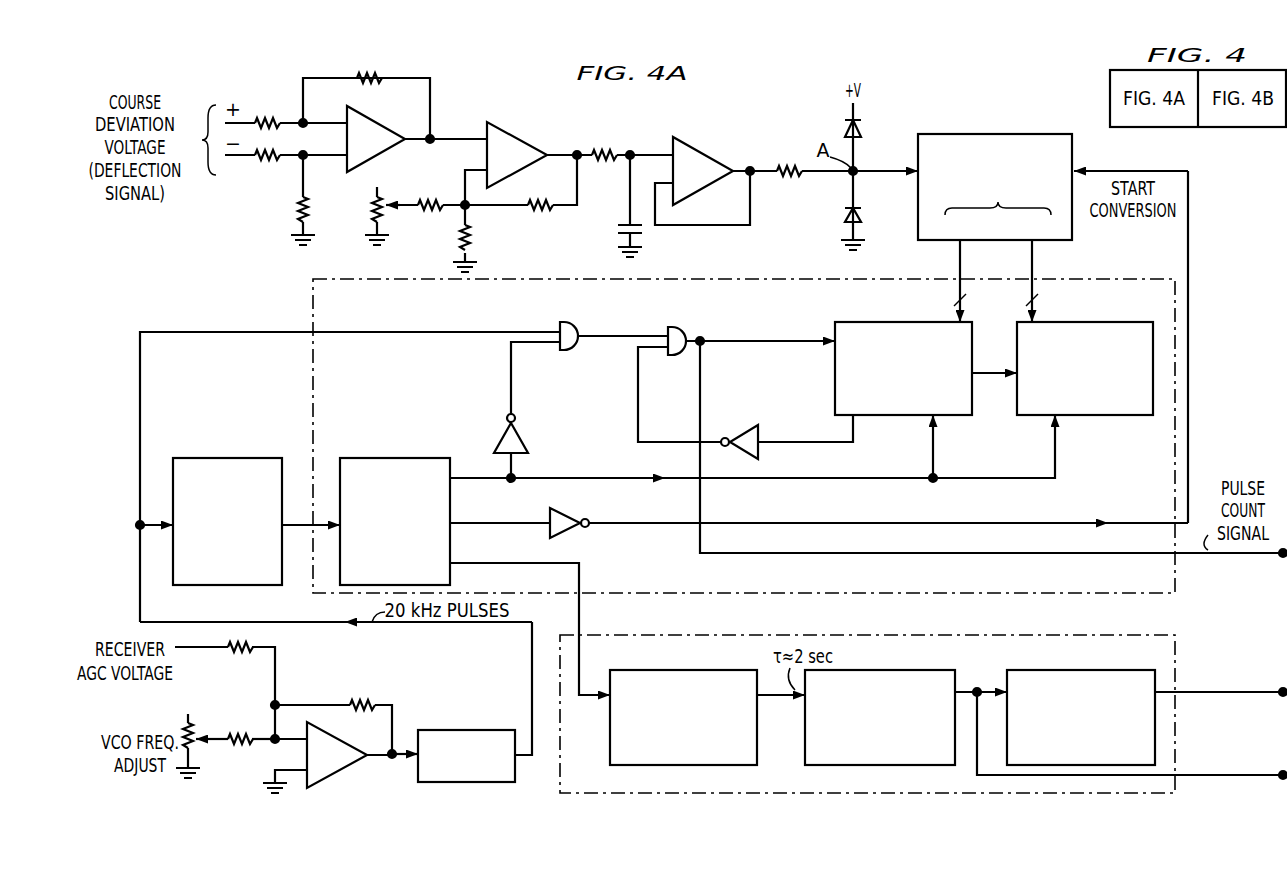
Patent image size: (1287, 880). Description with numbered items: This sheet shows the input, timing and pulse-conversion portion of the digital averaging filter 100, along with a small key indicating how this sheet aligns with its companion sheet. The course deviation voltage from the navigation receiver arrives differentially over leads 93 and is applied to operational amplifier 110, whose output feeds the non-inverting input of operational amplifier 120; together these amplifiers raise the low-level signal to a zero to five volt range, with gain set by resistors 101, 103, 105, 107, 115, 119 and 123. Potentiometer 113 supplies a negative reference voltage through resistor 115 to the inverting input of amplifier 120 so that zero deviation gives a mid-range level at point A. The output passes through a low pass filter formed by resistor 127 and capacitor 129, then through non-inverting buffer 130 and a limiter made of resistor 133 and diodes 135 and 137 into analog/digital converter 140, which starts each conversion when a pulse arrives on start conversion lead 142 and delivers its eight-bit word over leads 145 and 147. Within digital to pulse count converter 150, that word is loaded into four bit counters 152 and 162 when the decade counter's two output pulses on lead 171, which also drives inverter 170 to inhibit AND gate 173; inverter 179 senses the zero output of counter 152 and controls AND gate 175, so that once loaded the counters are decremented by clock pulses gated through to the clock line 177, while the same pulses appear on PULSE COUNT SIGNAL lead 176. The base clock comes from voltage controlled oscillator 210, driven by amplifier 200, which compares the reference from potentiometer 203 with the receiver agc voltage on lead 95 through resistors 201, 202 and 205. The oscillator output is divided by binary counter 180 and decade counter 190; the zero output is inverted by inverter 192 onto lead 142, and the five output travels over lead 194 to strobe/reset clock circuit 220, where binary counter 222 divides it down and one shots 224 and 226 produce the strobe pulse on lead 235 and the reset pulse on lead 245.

The leads 93 is at (247, 167).
The lead 95 is at (208, 653).
The digital averaging filter 100 is at (1220, 205).
The resistor 101 is at (270, 163).
The resistor 103 is at (272, 114).
The resistor 105 is at (299, 212).
The resistor 107 is at (362, 76).
The operational amplifier 110 is at (385, 117).
The potentiometer 113 is at (372, 215).
The resistor 115 is at (431, 203).
The resistor 119 is at (461, 233).
The operational amplifier 120 is at (525, 134).
The resistor 123 is at (543, 209).
The resistor 127 is at (605, 150).
The capacitor 129 is at (618, 228).
The non-inverting buffer 130 is at (710, 140).
The resistor 133 is at (790, 166).
The diode 135 is at (862, 128).
The diode 137 is at (845, 215).
The analog/digital converter 140 is at (1012, 134).
The start conversion lead 142 is at (1187, 260).
The leads 145 is at (955, 290).
The leads 147 is at (1028, 290).
The digital to pulse count converter 150 is at (310, 300).
The four bit counter 152 is at (862, 320).
The four bit counter 162 is at (1118, 320).
The inverter 170 is at (516, 430).
The lead 171 is at (490, 484).
The AND gate 173 is at (570, 322).
The AND gate 175 is at (686, 328).
The PULSE COUNT SIGNAL lead 176 is at (702, 490).
The clock line 177 is at (778, 338).
The inverter 179 is at (735, 428).
The binary counter 180 is at (205, 456).
The decade counter 190 is at (372, 456).
The inverter 192 is at (560, 510).
The lead 194 is at (582, 578).
The amplifier 200 is at (335, 775).
The resistor 201 is at (241, 655).
The feedback resistor 202 is at (366, 700).
The potentiometer 203 is at (198, 728).
The resistor 205 is at (235, 755).
The voltage controlled oscillator 210 is at (450, 723).
The strobe/reset clock circuit 220 is at (850, 634).
The binary counter 222 is at (692, 668).
The one shot 224 is at (885, 668).
The one shot 226 is at (1085, 668).
The lead 235 is at (1190, 760).
The lead 245 is at (1190, 677).